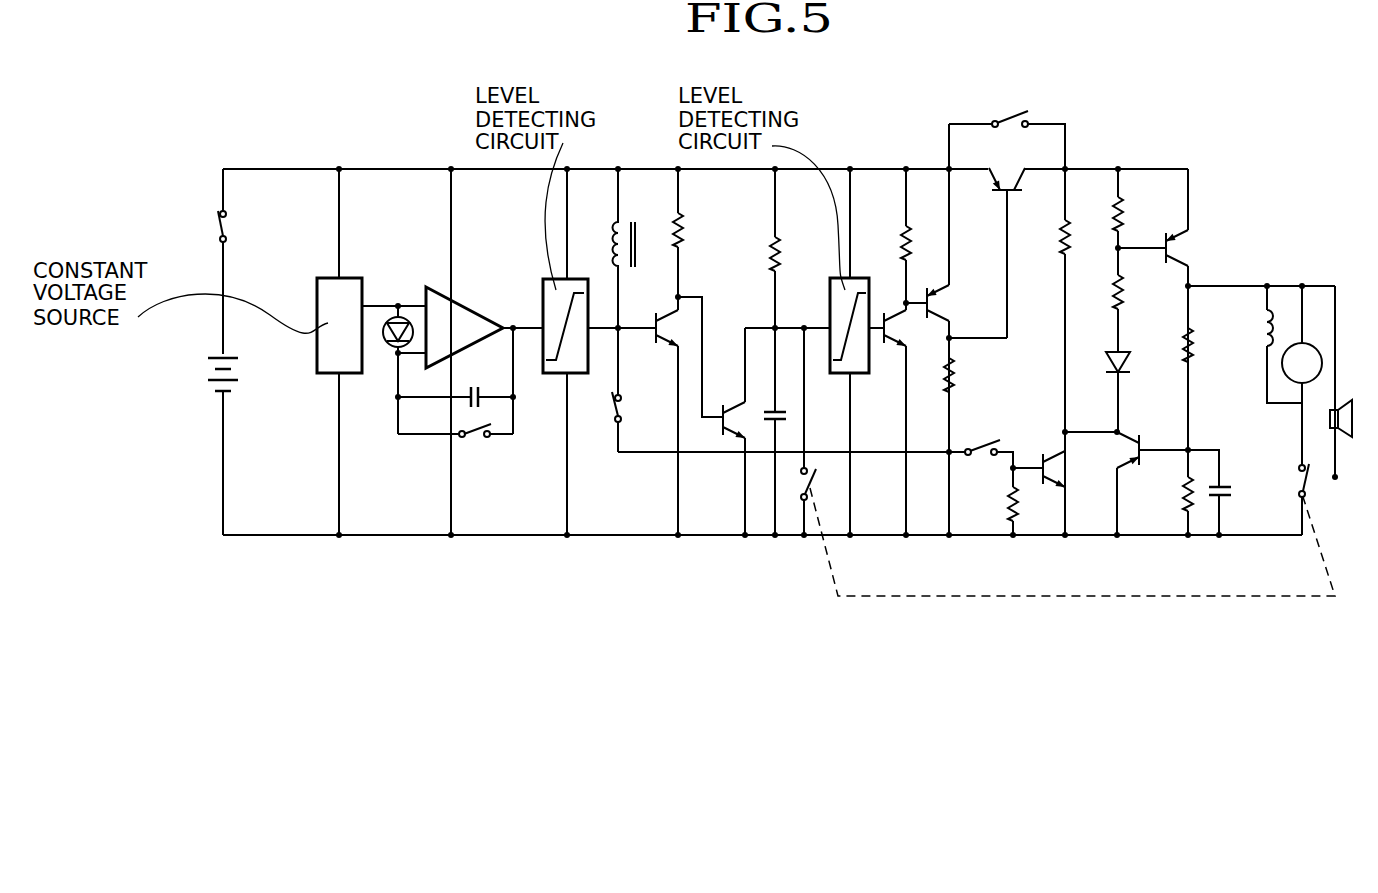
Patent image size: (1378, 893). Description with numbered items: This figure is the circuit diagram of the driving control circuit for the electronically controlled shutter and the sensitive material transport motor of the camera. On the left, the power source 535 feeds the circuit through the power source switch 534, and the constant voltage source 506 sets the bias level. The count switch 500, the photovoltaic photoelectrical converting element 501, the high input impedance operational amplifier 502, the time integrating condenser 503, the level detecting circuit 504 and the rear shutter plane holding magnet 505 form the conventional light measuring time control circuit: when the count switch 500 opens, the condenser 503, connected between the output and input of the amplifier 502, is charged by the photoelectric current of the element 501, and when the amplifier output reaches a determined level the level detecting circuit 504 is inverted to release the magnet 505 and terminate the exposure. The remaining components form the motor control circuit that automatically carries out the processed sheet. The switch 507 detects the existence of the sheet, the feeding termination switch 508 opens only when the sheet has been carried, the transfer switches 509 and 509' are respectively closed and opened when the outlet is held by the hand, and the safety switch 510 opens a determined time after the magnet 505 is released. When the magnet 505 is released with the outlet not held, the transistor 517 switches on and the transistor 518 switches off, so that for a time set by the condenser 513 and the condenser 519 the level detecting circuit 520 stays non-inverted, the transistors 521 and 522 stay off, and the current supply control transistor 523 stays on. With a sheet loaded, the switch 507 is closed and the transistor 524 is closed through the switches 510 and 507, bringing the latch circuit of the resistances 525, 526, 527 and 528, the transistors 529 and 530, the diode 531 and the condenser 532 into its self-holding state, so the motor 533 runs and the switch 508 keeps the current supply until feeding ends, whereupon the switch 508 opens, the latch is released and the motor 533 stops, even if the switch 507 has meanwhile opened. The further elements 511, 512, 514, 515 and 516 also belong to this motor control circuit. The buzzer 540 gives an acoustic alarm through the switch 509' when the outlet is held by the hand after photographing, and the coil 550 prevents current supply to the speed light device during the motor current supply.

The count switch 500 is at (476, 440).
The photovoltaic photoelectrical converting element 501 is at (393, 348).
The high input impedance operational amplifier 502 is at (462, 312).
The time integrating condenser 503 is at (472, 396).
The level detecting circuit 504 is at (548, 374).
The rear shutter plane holding magnet 505 is at (638, 240).
The constant voltage source 506 is at (320, 374).
The switch for detecting the existence of the sensitive material 507 is at (980, 447).
The sensitive material feeding termination switch 508 is at (1013, 115).
The switch for transfer 509 is at (792, 524).
The switch for transfer 509' is at (1333, 494).
The safety switch 510 is at (615, 408).
The resistor 511 is at (1010, 505).
The resistor 512 is at (684, 230).
The condenser 513 is at (782, 250).
The resistor 514 is at (906, 235).
The resistor 515 is at (952, 378).
The resistor 516 is at (1062, 255).
The transistor 517 is at (667, 340).
The transistor 518 is at (727, 405).
The condenser 519 is at (770, 428).
The level detecting circuit 520 is at (840, 352).
The transistor 521 is at (903, 345).
The transistor 522 is at (946, 295).
The current supply control transistor 523 is at (1009, 194).
The transistor 524 is at (1048, 482).
The resistance 525 is at (1124, 218).
The resistance 526 is at (1124, 292).
The resistance 527 is at (1192, 345).
The resistance 528 is at (1182, 490).
The transistor 529 is at (1128, 452).
The transistor 530 is at (1172, 246).
The diode 531 is at (1114, 378).
The condenser 532 is at (1228, 485).
The motor 533 is at (1320, 372).
The power source switch 534 is at (225, 228).
The power source 535 is at (232, 377).
The buzzer 540 is at (1348, 410).
The coil 550 is at (1263, 325).